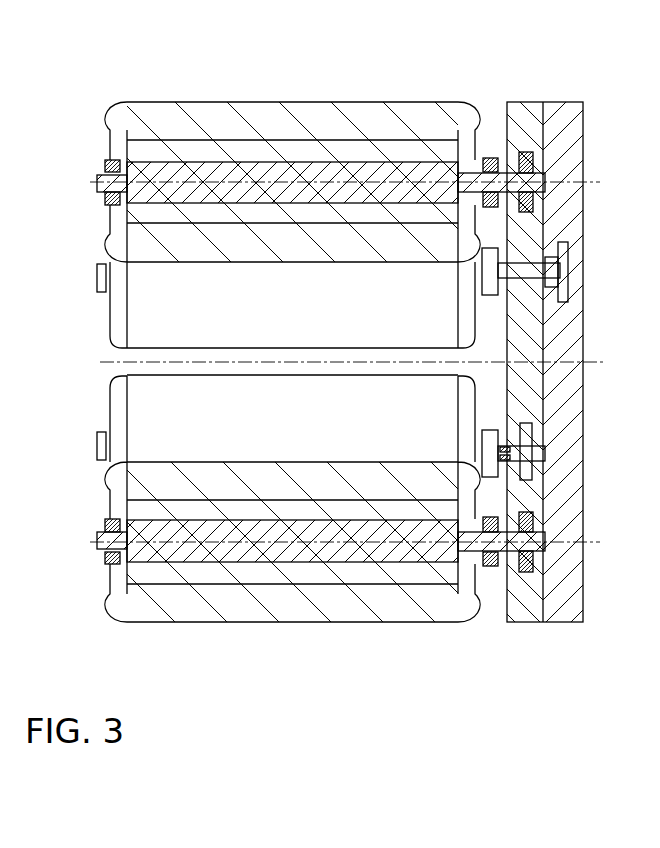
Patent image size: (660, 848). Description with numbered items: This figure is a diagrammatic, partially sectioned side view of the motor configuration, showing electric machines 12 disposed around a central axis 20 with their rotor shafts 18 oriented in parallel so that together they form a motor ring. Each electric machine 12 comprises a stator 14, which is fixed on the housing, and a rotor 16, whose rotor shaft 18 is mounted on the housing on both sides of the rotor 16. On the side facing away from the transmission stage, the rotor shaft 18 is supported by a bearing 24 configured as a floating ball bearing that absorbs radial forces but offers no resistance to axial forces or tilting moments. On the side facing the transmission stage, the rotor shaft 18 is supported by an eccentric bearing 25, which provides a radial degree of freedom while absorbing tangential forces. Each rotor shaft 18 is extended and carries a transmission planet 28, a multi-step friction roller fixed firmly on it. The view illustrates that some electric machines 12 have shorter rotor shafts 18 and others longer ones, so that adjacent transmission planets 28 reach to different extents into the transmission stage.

The electric machine 12 is at (140, 98).
The stator 14 is at (203, 117).
The rotor 16 is at (276, 153).
The rotor shaft 18 is at (501, 172).
The central axis 20 is at (603, 364).
The bearing 24 is at (105, 250).
The eccentric bearing 25 is at (490, 165).
The transmission planet 28 is at (525, 150).